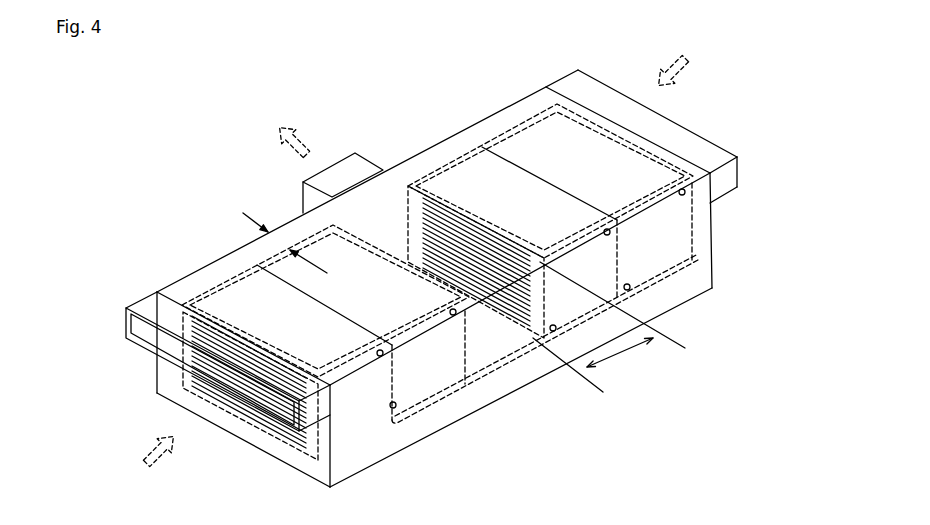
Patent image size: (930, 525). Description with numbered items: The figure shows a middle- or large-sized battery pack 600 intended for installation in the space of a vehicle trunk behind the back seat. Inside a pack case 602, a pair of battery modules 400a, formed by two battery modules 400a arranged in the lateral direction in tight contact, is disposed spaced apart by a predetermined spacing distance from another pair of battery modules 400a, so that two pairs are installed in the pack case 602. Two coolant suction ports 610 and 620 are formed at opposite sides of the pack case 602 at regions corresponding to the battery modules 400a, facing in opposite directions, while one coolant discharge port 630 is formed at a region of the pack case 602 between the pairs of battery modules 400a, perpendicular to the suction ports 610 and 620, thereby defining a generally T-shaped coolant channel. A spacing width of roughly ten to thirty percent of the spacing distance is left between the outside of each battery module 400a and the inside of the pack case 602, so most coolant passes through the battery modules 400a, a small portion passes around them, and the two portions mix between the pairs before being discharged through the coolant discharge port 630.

The middle- or large-sized battery pack 600 is at (163, 104).
The pack case 602 is at (694, 297).
The coolant suction port 610 is at (140, 346).
The coolant suction port 620 is at (682, 125).
The coolant discharge port 630 is at (332, 165).
The battery module 400a is at (362, 402).